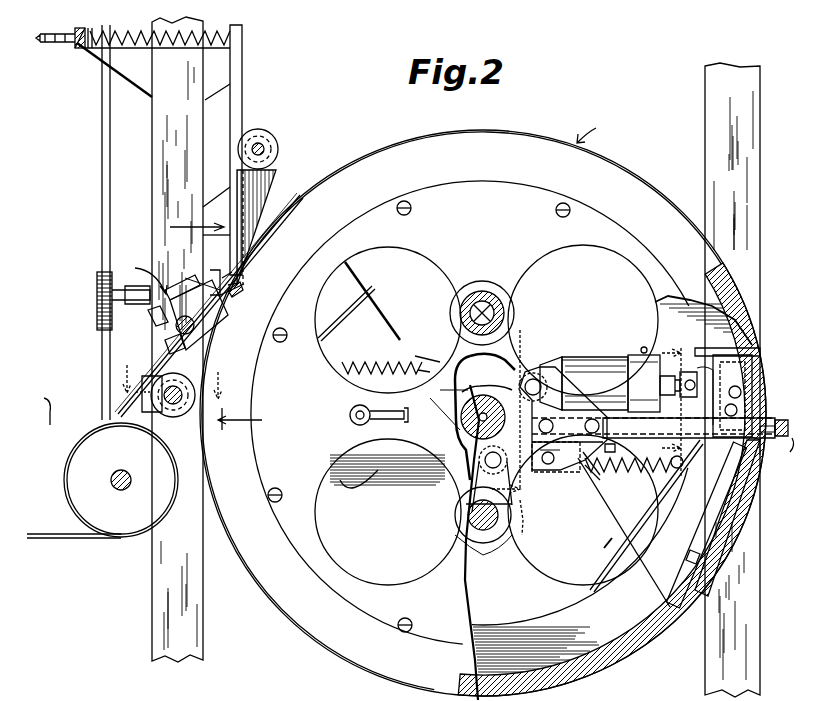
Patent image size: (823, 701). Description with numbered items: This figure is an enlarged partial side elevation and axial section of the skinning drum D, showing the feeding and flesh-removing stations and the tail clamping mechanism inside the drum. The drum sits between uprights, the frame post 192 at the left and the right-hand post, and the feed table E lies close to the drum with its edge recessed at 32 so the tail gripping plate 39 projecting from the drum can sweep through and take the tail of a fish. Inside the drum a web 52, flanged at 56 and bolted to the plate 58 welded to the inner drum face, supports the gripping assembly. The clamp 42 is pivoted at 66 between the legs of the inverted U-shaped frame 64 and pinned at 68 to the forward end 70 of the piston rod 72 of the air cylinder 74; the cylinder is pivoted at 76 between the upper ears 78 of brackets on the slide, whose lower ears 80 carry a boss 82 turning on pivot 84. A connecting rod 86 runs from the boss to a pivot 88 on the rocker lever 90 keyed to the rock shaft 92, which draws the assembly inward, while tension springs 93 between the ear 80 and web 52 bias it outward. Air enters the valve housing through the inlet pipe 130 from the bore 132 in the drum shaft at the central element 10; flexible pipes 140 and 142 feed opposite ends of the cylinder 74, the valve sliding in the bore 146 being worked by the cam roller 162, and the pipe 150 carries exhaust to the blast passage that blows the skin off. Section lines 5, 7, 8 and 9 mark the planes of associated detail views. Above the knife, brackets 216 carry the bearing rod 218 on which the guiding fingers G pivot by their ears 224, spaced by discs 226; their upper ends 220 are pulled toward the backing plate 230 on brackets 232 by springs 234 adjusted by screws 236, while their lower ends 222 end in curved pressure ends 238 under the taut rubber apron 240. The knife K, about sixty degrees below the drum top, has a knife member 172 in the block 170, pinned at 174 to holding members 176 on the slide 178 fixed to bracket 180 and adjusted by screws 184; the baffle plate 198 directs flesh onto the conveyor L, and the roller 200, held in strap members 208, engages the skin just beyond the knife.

The upright post 192 is at (102, 168).
The brackets 216 is at (220, 122).
The upper ends of guiding fingers 220 is at (242, 72).
The backing plate 230 is at (76, 48).
The screw 236 is at (60, 30).
The spring 234 is at (148, 14).
The brackets 232 is at (118, 72).
The bearing rod 218 is at (270, 138).
The ears 224 is at (244, 128).
The intermediate discs 226 is at (264, 150).
The rubber apron 240 is at (242, 236).
The yieldable pressure guides G is at (188, 227).
The lower ends of guiding fingers 222 is at (230, 240).
The adjusting screws 184 is at (200, 282).
The holding members 176 is at (97, 312).
The flesh removing knife K is at (209, 306).
The baffle plate 198 is at (118, 400).
The knife carrier or block 170 is at (212, 318).
The knife member 172 is at (210, 296).
The bracket 180 is at (196, 332).
The pivots 174 is at (158, 326).
The slide 178 is at (168, 350).
The section line 7- 7 is at (164, 379).
The roller 200 is at (190, 412).
The strap members 208 is at (150, 412).
The section line 5- 5 is at (242, 345).
The pressure applying ends 238 is at (242, 287).
The conveyor L is at (102, 464).
The drum D is at (483, 409).
The pipe 150 is at (360, 290).
The air inlet pipe 130 is at (388, 362).
The high pressure flexible pipe 140 is at (380, 480).
The cam roller 162 is at (414, 410).
The high pressure flexible pipe 142 is at (500, 342).
The shaft 10 is at (462, 392).
The bore 132 is at (458, 420).
The rock shaft 92 is at (468, 516).
The pivot 88 is at (484, 456).
The rocker lever 90 is at (470, 490).
The section line 8- 8 is at (505, 410).
The upper ears 78 is at (548, 432).
The pivot 76 is at (540, 378).
The connecting rod 86 is at (544, 436).
The supporting boss 82 is at (560, 472).
The pivot 84 is at (556, 462).
The air cylinder 74 is at (598, 357).
The piston rod 72 is at (668, 378).
The pivot 68 is at (704, 366).
The section line 9- 9 is at (671, 410).
The inverted U-shaped frame 64 is at (724, 355).
The pivoted clamp 42 is at (752, 350).
The bore 146 is at (740, 390).
The pivot 66 is at (737, 408).
The recess 32 is at (782, 420).
The forward end of piston rod 70 is at (685, 420).
The table E is at (784, 450).
The tail gripping plate 39 is at (764, 440).
The tension springs 93 is at (627, 470).
The lower ears 80 is at (590, 472).
The flange 56 is at (705, 508).
The plate 58 is at (732, 510).
The web 52 is at (612, 536).
The right post is at (732, 380).